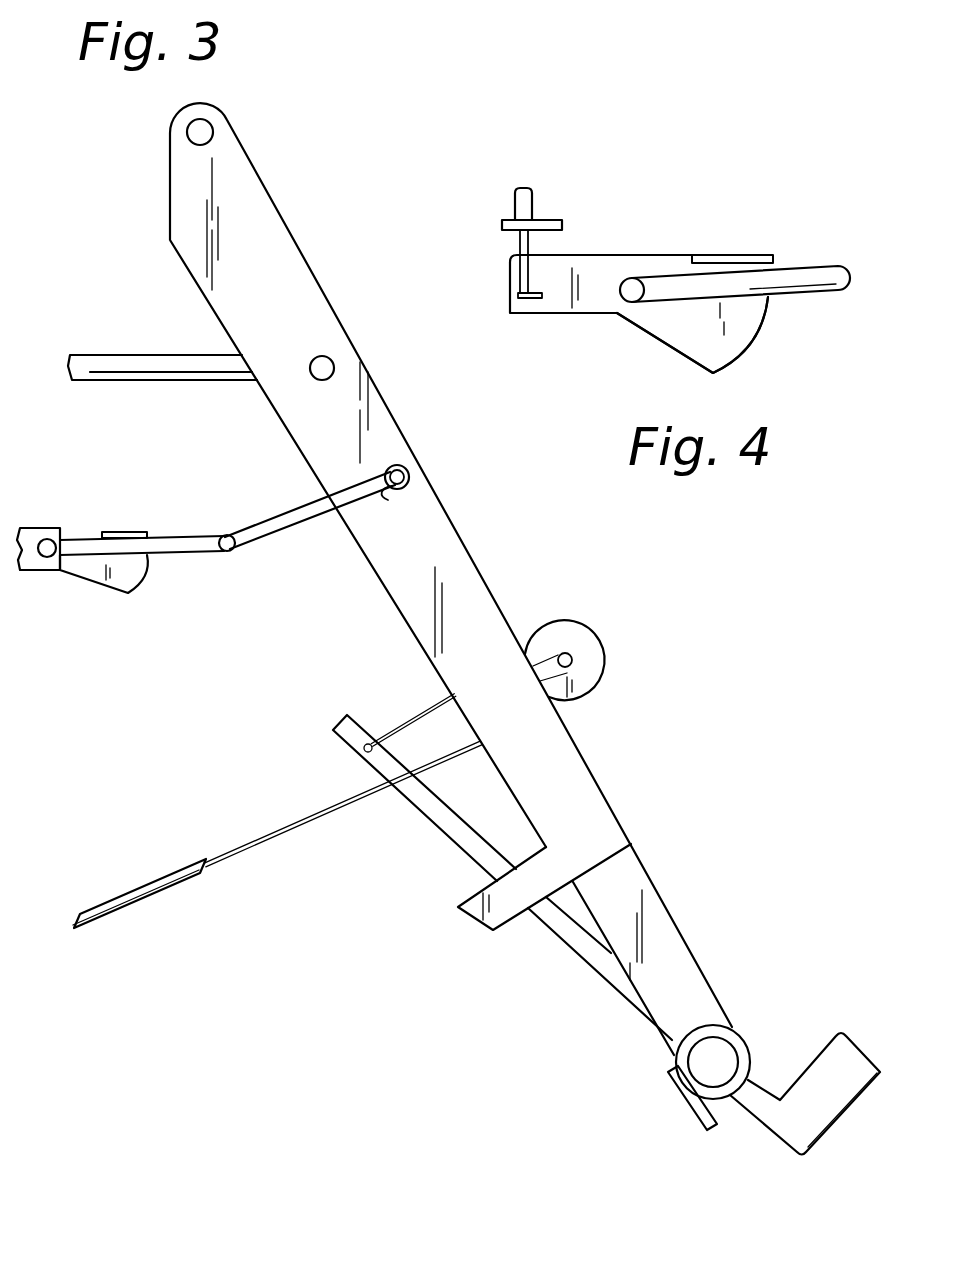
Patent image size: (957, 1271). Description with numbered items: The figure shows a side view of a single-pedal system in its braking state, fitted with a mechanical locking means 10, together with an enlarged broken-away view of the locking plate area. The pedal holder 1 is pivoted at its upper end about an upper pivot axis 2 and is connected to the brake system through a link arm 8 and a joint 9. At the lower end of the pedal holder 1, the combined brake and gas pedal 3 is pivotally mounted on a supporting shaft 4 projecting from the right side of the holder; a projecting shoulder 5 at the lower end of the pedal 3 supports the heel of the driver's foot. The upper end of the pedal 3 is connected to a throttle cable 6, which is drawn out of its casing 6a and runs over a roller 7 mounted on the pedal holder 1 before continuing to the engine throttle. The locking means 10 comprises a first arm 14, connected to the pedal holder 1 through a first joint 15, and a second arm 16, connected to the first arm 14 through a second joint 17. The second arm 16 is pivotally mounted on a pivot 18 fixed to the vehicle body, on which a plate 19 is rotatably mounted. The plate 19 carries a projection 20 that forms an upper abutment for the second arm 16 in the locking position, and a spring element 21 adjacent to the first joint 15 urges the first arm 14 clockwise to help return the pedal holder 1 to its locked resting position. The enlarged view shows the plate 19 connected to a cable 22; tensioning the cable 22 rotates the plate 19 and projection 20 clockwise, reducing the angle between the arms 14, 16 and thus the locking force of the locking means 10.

In FIG. 3, the pedal holder 1 is at (600, 823).
In FIG. 3, the upper pivot axis 2 is at (203, 130).
In FIG. 3, the combined brake and gas pedal 3 is at (460, 838).
In FIG. 3, the supporting shaft 4 is at (722, 1060).
In FIG. 3, the projecting shoulder 5 is at (838, 1062).
In FIG. 3, the throttle cable 6 is at (255, 840).
In FIG. 3, the casing 6a is at (122, 897).
In FIG. 3, the roller 7 is at (577, 640).
In FIG. 3, the link arm 8 is at (112, 368).
In FIG. 3, the joint 9 is at (333, 364).
In FIG. 3, the mechanical locking means 10 is at (240, 540).
In FIG. 3, the first arm 14 is at (296, 518).
In FIG. 3, the first joint 15 is at (407, 472).
In FIG. 3, the second arm 16 is at (193, 538).
In FIG. 4, the second arm 16 is at (811, 290).
In FIG. 3, the second joint 17 is at (227, 553).
In FIG. 3, the pivot 18 is at (46, 530).
In FIG. 4, the pivot 18 is at (628, 279).
In FIG. 3, the plate 19 is at (93, 575).
In FIG. 4, the plate 19 is at (690, 343).
In FIG. 3, the projection 20 is at (128, 532).
In FIG. 4, the projection 20 is at (726, 256).
In FIG. 3, the spring element 21 is at (396, 498).
In FIG. 4, the cable 22 is at (515, 240).